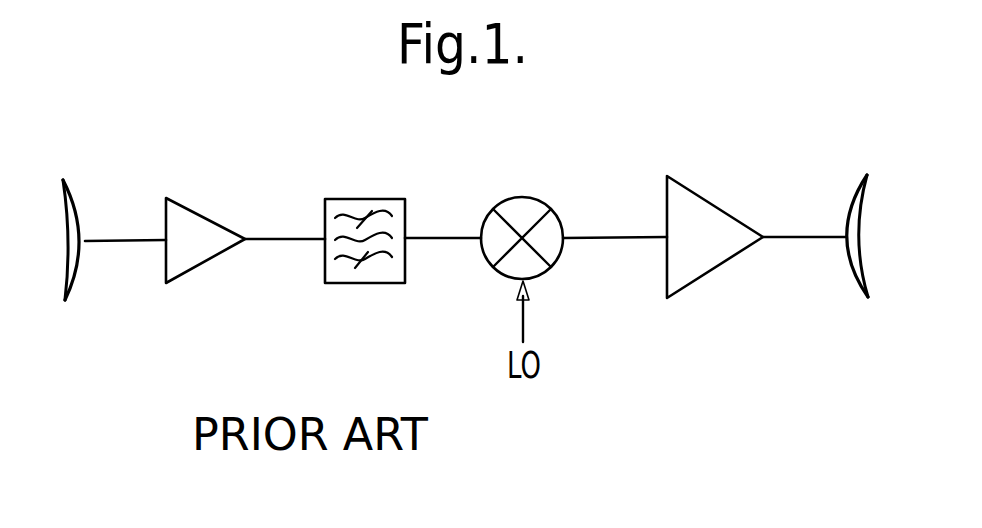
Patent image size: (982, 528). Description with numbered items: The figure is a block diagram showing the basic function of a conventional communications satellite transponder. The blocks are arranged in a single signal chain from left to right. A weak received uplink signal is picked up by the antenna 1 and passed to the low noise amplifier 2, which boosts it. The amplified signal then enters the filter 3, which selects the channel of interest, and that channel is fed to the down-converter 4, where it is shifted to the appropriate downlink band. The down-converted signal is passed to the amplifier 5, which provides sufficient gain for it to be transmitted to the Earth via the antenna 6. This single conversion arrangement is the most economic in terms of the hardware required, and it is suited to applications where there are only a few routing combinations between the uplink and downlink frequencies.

The antenna 1 is at (82, 227).
The low noise amplifier 2 is at (195, 243).
The filter 3 is at (378, 208).
The down-converter 4 is at (524, 208).
The amplifier 5 is at (707, 245).
The antenna 6 is at (846, 213).